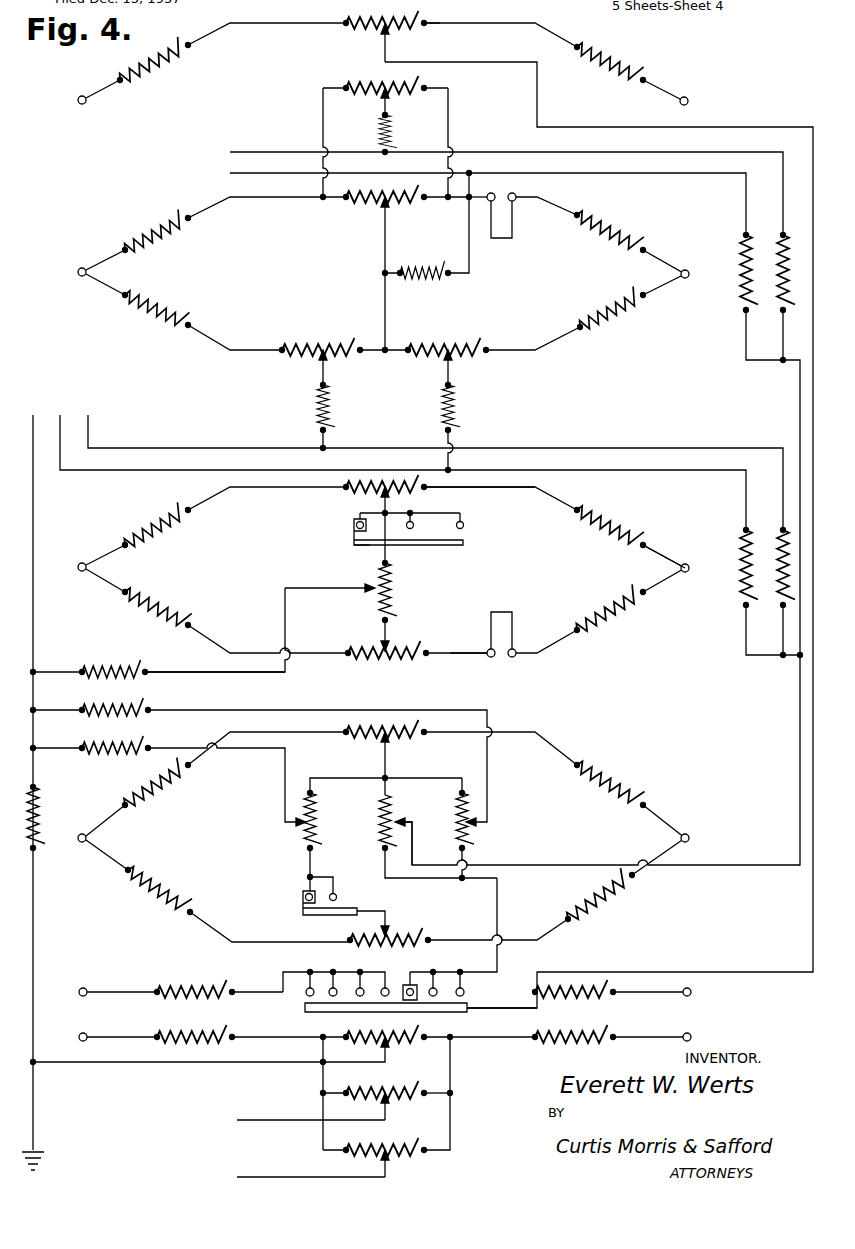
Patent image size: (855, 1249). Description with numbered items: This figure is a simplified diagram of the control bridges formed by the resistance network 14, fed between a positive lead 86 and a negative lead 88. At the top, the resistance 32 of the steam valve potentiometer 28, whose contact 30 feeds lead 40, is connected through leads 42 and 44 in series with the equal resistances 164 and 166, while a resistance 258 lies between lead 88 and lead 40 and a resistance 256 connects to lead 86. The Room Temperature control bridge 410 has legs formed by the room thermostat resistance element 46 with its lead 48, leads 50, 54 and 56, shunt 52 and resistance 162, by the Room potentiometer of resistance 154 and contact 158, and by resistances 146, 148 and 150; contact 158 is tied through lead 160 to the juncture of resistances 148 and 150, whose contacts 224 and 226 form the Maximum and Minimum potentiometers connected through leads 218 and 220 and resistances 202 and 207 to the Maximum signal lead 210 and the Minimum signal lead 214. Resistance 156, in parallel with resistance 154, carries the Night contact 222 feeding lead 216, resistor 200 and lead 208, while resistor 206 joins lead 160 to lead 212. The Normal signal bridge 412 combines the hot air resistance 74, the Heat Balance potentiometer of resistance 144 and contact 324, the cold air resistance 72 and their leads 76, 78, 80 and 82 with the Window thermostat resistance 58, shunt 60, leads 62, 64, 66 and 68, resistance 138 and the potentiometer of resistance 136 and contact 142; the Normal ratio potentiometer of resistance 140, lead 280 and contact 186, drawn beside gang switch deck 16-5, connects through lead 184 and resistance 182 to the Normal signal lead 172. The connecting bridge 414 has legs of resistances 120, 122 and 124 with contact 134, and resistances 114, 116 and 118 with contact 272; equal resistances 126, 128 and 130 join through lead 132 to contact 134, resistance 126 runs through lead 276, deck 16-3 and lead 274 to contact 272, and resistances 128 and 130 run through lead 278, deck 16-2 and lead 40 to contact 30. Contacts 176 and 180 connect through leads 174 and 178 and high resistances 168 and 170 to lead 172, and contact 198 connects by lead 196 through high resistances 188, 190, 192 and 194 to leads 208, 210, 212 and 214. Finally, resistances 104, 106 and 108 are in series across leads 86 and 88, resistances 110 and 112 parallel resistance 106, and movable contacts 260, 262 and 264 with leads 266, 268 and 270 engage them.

The resistance network 14 is at (757, 76).
The steam valve potentiometer 28 is at (340, 33).
The contact of the valve potentiometer 30 is at (377, 40).
The resistance of the steam valve potentiometer 32 is at (408, 24).
The lead 40 is at (486, 62).
The lead 42 is at (264, 27).
The lead 44 is at (494, 26).
The room thermostat resistance element 46 is at (148, 232).
The conductor 48 is at (100, 262).
The lead 50 is at (236, 196).
The shunt 52 is at (502, 238).
The lead 54 is at (484, 198).
The lead 56 is at (556, 208).
The temperature responsive resistance element 58 is at (146, 612).
The shunt 60 is at (500, 612).
The lead 62 is at (104, 590).
The lead 64 is at (206, 648).
The lead 66 is at (452, 656).
The lead 68 is at (556, 644).
The temperature responsive resistance element 72 is at (612, 534).
The temperature responsive resistance element 74 is at (150, 530).
The lead 76 is at (660, 562).
The lead 78 is at (502, 490).
The lead 80 is at (266, 490).
The lead 82 is at (102, 558).
The positive lead 86 is at (78, 102).
The negative lead 88 is at (704, 96).
The resistance 104 is at (176, 1030).
The resistance 106 is at (396, 1046).
The resistance 108 is at (592, 1044).
The resistance 110 is at (396, 1102).
The resistance 112 is at (396, 1159).
The resistance 114 is at (148, 898).
The resistance 116 is at (366, 950).
The resistance 118 is at (618, 898).
The resistance 120 is at (178, 782).
The resistance 122 is at (405, 732).
The resistance 124 is at (630, 774).
The resistance 126 is at (330, 810).
The resistance 128 is at (415, 829).
The resistance 130 is at (468, 838).
The common lead 132 is at (388, 754).
The movable contact 134 is at (378, 746).
The resistance 136 is at (376, 660).
The resistance 138 is at (632, 610).
The resistance 140 is at (390, 598).
The movable contact 142 is at (378, 646).
The resistance 144 is at (410, 496).
The resistance 146 is at (148, 320).
The resistance 148 is at (306, 346).
The resistance 150 is at (468, 346).
The resistance 154 is at (400, 206).
The resistance 156 is at (408, 88).
The movable contact 158 is at (378, 216).
The lead 160 is at (385, 296).
The resistance 162 is at (612, 238).
The resistance 164 is at (152, 78).
The resistance 166 is at (630, 78).
The high resistance 168 is at (104, 744).
The high resistance 170 is at (102, 704).
The Normal signal lead 172 is at (34, 538).
The lead 174 is at (166, 748).
The movable contact 176 is at (296, 830).
The lead 178 is at (230, 710).
The movable contact 180 is at (474, 820).
The resistance 182 is at (104, 664).
The lead 184 is at (294, 594).
The adjustable contact 186 is at (366, 602).
The high resistance 188 is at (774, 252).
The high resistance 190 is at (776, 552).
The high resistance 192 is at (738, 258).
The high resistance 194 is at (740, 552).
The common lead 196 is at (798, 385).
The movable contact 198 is at (382, 818).
The resistor 200 is at (390, 138).
The resistance 202 is at (316, 410).
The resistor 206 is at (420, 278).
The resistance 207 is at (456, 410).
The lead 208 is at (276, 152).
The Maximum signal lead 210 is at (134, 448).
The lead 212 is at (244, 173).
The Minimum signal lead 214 is at (108, 472).
The lead 216 is at (388, 112).
The lead 218 is at (318, 378).
The lead 220 is at (452, 378).
The movable contact 222 is at (378, 105).
The movable contact 224 is at (330, 366).
The movable contact 226 is at (442, 366).
The resistance 256 is at (180, 986).
The resistance 258 is at (590, 998).
The movable contact 260 is at (378, 1054).
The movable contact 262 is at (378, 1110).
The movable contact 264 is at (378, 1167).
The lead 266 is at (142, 1064).
The lead 268 is at (264, 1120).
The lead 270 is at (264, 1177).
The movable contact 272 is at (395, 918).
The lead 274 is at (360, 910).
The lead 276 is at (306, 868).
The lead 278 is at (498, 906).
The lead 280 is at (372, 550).
The contact 324 is at (378, 502).
The Room Temperature control bridge 410 is at (164, 208).
The Normal signal bridge 412 is at (190, 498).
The connecting bridge 414 is at (116, 796).
The deck of the gang switch 16-2 is at (396, 998).
The deck of the gang switch 16-3 is at (305, 903).
The switch section 16-5 is at (383, 535).